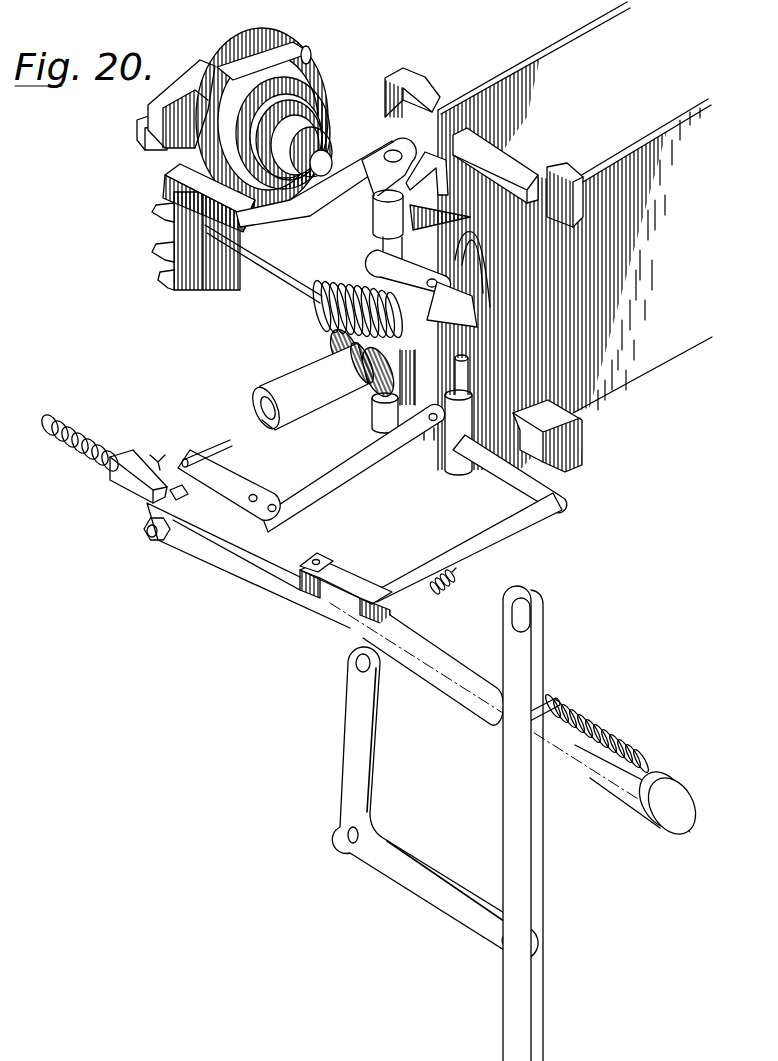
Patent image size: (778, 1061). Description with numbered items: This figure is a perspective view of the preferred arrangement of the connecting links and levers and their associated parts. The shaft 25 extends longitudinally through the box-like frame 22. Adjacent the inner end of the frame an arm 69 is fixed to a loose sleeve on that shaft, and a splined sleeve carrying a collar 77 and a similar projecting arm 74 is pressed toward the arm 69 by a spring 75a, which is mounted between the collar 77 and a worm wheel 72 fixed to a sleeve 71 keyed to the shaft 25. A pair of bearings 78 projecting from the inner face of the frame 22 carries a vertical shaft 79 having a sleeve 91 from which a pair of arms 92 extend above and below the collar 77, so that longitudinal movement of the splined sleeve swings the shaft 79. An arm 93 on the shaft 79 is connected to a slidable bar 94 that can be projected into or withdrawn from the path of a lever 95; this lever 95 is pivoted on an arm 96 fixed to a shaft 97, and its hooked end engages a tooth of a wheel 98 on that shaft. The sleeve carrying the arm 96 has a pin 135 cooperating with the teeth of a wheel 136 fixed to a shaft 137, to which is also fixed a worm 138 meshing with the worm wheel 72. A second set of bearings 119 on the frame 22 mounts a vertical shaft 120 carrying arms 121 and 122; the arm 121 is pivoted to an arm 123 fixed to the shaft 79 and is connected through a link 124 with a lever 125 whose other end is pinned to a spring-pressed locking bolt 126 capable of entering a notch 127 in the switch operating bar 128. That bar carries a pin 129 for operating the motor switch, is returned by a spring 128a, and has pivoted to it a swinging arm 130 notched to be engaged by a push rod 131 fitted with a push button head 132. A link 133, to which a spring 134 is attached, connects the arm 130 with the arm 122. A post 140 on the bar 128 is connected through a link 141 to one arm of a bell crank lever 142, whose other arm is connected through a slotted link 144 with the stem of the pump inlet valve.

The box-like frame 22 is at (668, 362).
The shaft 25 is at (275, 422).
The arm 69 is at (485, 220).
The sleeve 71 is at (323, 378).
The worm wheel 72 is at (375, 410).
The arm 74 is at (471, 269).
The spring 75a is at (430, 378).
The collar 77 is at (452, 304).
The bearings 78 is at (375, 222).
The vertical shaft 79 is at (393, 150).
The sleeve 91 is at (385, 295).
The arms 92 is at (407, 281).
The arm 93 is at (320, 184).
The slidable bar 94 is at (175, 184).
The lever 95 is at (215, 88).
The arm 96 is at (262, 33).
The shaft 97 is at (325, 150).
The wheel 98 is at (282, 86).
The bearings 119 is at (505, 420).
The vertical shaft 120 is at (450, 392).
The arm 121 is at (450, 462).
The arm 122 is at (488, 458).
The arm 123 is at (430, 434).
The link 124 is at (348, 468).
The lever 125 is at (255, 462).
The locking bolt 126 is at (186, 458).
The notch 127 is at (163, 495).
The switch operating bar 128 is at (120, 487).
The spring 128a is at (66, 452).
The pin 129 is at (155, 458).
The swinging arm 130 is at (368, 576).
The push rod 131 is at (467, 698).
The push button head 132 is at (607, 768).
The link 133 is at (500, 535).
The spring 134 is at (440, 590).
The pin 135 is at (137, 132).
The wheel 136 is at (174, 238).
The shaft 137 is at (283, 268).
The worm 138 is at (318, 310).
The post 140 is at (155, 544).
The link 141 is at (248, 565).
The bell crank lever 142 is at (345, 745).
The link 144 is at (530, 862).